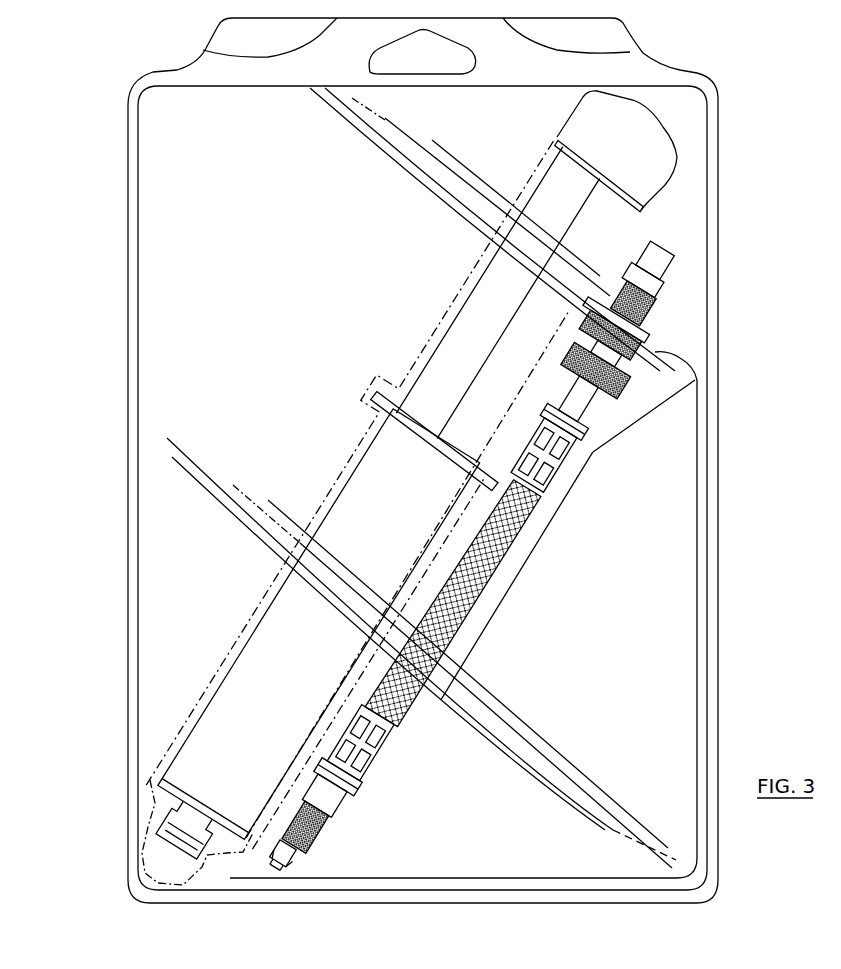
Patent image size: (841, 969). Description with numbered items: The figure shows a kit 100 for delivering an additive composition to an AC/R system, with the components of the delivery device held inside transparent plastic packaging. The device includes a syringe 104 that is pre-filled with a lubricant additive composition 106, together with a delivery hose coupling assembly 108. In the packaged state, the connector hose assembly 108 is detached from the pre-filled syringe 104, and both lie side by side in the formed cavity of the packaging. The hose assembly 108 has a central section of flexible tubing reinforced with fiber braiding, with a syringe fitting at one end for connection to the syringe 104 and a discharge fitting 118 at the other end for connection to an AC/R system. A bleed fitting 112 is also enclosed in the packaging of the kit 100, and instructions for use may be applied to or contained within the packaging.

The kit 100 is at (306, 274).
The syringe 104 is at (473, 374).
The lubricant additive composition 106 is at (315, 675).
The delivery hose coupling assembly 108 is at (498, 577).
The bleed fitting 112 is at (657, 295).
The discharge fitting 118 is at (694, 374).